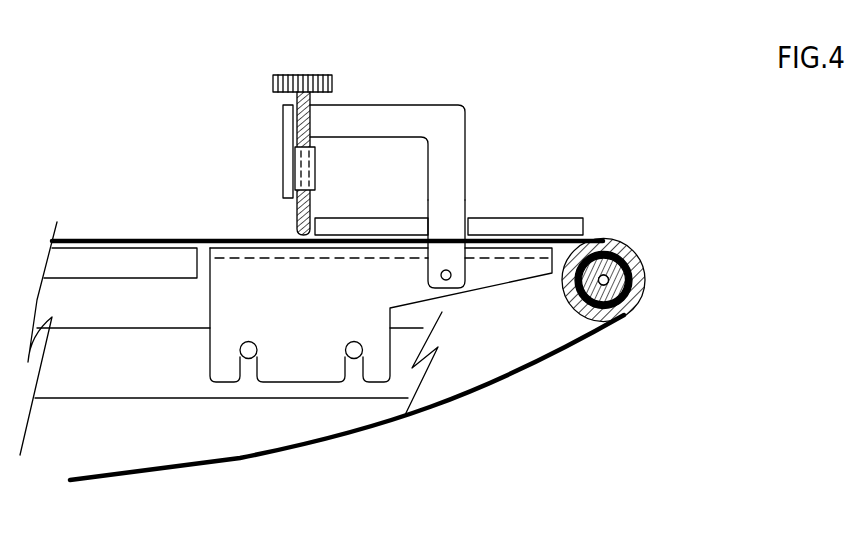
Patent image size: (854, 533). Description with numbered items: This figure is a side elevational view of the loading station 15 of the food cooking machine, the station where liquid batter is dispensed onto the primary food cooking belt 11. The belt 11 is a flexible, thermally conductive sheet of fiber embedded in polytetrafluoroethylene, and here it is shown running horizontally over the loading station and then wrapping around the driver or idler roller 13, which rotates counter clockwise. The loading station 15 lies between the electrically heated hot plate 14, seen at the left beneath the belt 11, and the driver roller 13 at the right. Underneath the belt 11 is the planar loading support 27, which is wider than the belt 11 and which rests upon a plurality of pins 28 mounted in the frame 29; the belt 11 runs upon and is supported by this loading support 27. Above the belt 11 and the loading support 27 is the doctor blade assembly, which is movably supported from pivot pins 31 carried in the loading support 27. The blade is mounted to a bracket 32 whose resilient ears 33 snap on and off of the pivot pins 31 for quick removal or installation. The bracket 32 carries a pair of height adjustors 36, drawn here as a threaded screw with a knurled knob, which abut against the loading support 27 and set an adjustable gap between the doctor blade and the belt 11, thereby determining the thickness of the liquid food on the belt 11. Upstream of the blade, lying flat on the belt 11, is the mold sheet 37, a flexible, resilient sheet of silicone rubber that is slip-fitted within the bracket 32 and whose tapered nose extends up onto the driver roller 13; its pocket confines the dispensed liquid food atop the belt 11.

The primary food cooking belt 11 is at (152, 240).
The driver or idler roller 13 is at (633, 253).
The electrically heated hot plate 14 is at (115, 258).
The loading station 15 is at (633, 110).
The planar loading support 27 is at (500, 250).
The pins 28 is at (354, 350).
The frame 29 is at (122, 388).
The pivot pins 31 is at (447, 269).
The bracket 32 is at (283, 132).
The resilient ears 33 is at (455, 127).
The height adjustors 36 is at (273, 87).
The mold sheet 37 is at (560, 217).